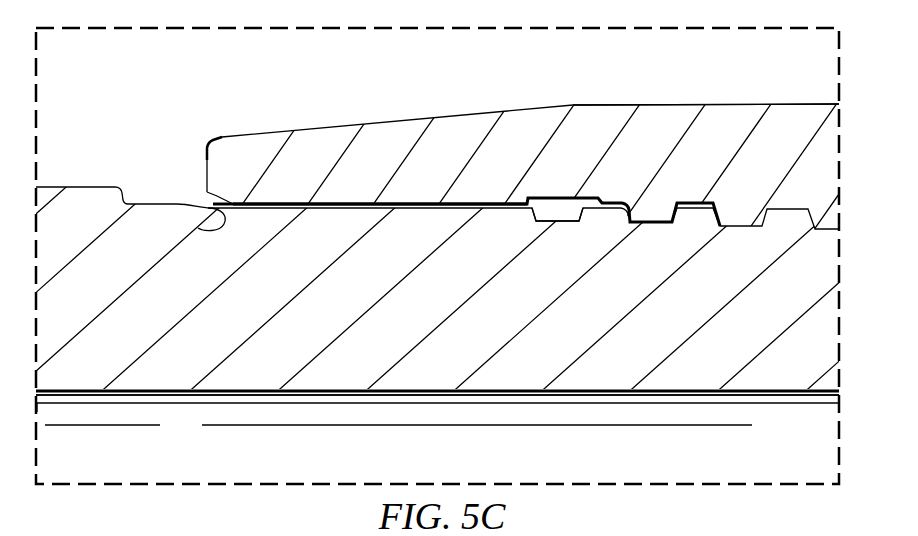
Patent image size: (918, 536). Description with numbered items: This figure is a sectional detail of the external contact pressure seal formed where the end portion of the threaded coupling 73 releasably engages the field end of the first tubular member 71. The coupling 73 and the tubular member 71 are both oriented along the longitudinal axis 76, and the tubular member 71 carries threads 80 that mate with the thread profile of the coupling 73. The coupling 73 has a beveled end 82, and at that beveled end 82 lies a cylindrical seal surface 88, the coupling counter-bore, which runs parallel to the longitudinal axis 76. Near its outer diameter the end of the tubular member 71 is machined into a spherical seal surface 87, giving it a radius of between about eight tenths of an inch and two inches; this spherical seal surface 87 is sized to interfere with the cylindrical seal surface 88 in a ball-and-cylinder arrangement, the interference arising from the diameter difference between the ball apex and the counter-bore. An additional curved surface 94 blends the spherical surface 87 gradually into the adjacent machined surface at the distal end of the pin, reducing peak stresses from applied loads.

The first tubular member 71 is at (190, 368).
The threaded coupling 73 is at (666, 118).
The longitudinal axis 76 is at (550, 459).
The threads 80 is at (595, 217).
The beveled end 82 is at (416, 100).
The spherical seal surface 87 is at (277, 207).
The cylindrical seal surface 88 is at (287, 202).
The curved surface 94 is at (198, 228).